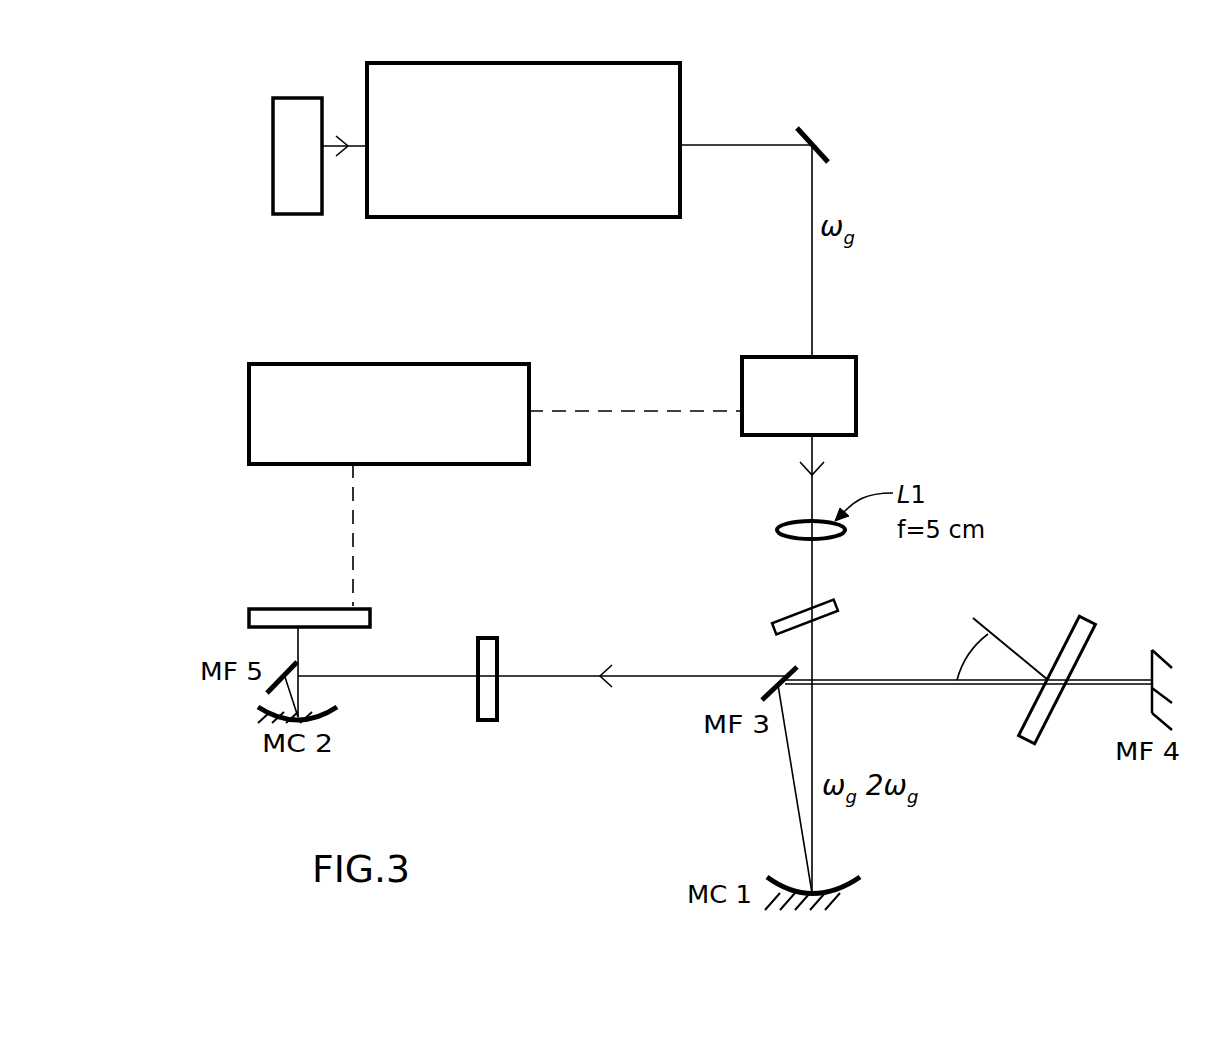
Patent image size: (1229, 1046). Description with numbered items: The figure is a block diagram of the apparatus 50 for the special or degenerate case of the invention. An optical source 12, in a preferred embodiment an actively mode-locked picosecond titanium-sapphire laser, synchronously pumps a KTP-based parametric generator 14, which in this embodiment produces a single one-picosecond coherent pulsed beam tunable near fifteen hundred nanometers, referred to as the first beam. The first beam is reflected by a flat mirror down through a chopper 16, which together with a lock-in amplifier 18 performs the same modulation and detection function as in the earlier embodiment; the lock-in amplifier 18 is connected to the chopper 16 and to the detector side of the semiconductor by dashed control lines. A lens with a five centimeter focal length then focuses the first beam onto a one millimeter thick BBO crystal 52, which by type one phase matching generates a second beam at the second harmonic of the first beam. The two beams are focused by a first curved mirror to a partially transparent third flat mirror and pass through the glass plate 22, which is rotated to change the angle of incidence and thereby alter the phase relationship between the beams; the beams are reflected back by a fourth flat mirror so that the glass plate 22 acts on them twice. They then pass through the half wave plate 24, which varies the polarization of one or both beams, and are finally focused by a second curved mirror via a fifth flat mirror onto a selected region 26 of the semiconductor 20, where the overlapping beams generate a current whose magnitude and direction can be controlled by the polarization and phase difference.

The optical source 12 is at (273, 152).
The parametric generator 14 is at (537, 150).
The chopper 16 is at (815, 407).
The lock-in amplifier 18 is at (402, 427).
The semiconductor 20 is at (383, 608).
The glass plate 22 is at (1043, 656).
The half wave plate 24 is at (478, 705).
The selected region 26 is at (310, 636).
The apparatus 50 is at (993, 207).
The BBO crystal 52 is at (791, 614).